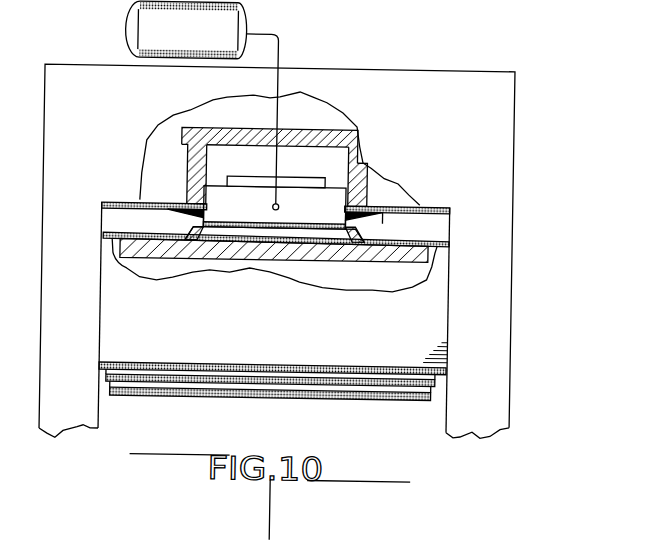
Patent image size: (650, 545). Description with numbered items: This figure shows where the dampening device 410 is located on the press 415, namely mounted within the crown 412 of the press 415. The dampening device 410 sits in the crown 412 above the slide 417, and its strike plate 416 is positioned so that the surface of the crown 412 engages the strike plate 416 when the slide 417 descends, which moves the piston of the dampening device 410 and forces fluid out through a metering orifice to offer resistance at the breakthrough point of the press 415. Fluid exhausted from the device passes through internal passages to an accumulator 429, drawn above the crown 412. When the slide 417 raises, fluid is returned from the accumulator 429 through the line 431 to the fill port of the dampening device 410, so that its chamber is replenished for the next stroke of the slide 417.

The accumulator 429 is at (121, 35).
The line 431 is at (277, 57).
The crown 412 is at (326, 149).
The strike plate 416 is at (364, 163).
The dampening device 410 is at (202, 191).
The press 415 is at (500, 258).
The slide 417 is at (347, 359).